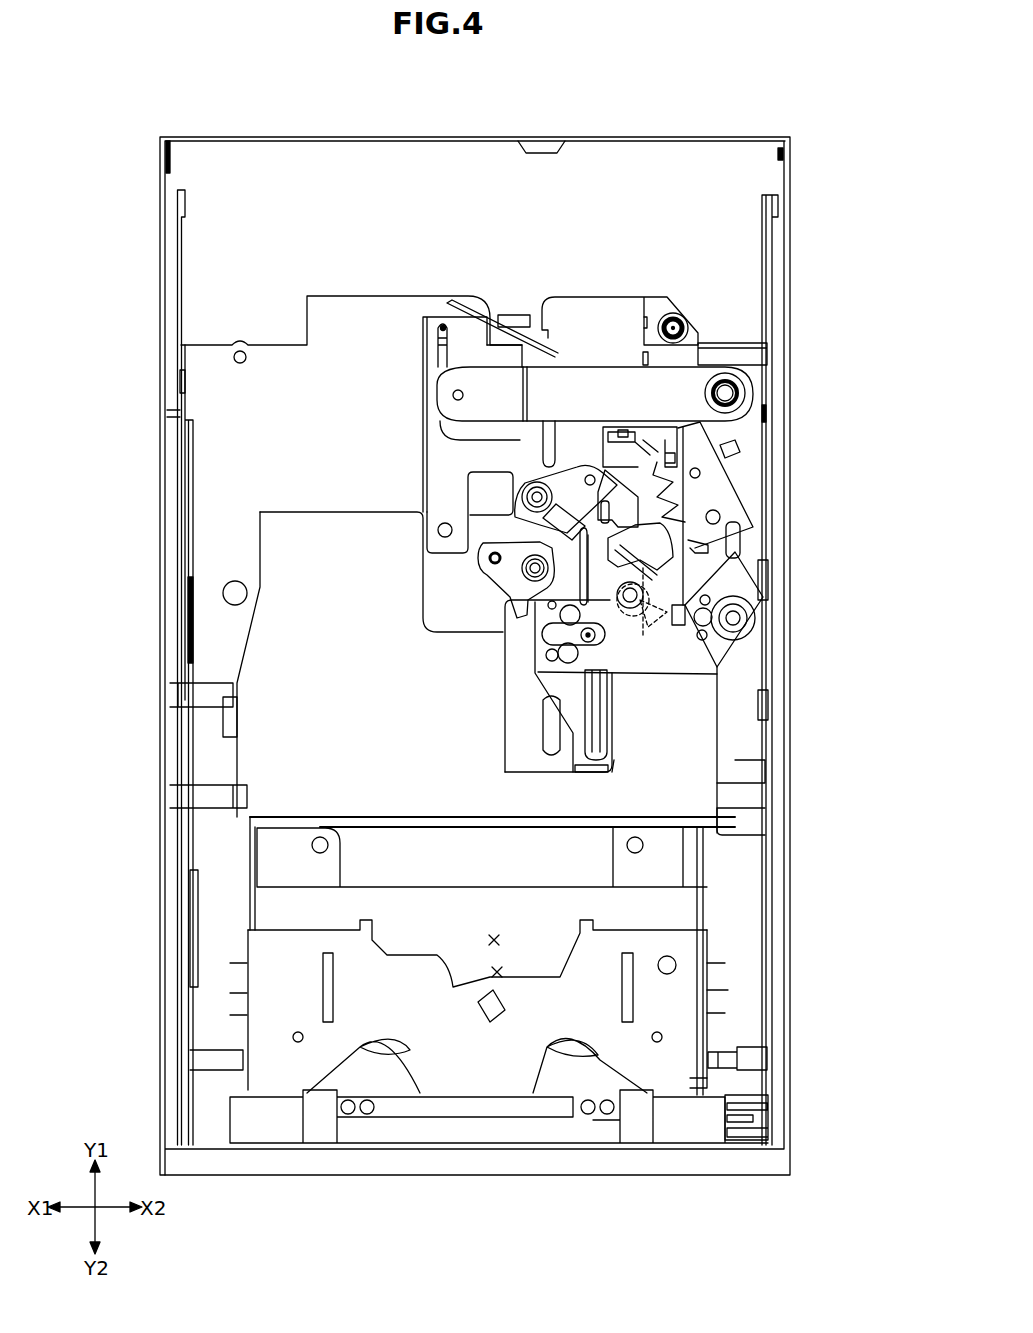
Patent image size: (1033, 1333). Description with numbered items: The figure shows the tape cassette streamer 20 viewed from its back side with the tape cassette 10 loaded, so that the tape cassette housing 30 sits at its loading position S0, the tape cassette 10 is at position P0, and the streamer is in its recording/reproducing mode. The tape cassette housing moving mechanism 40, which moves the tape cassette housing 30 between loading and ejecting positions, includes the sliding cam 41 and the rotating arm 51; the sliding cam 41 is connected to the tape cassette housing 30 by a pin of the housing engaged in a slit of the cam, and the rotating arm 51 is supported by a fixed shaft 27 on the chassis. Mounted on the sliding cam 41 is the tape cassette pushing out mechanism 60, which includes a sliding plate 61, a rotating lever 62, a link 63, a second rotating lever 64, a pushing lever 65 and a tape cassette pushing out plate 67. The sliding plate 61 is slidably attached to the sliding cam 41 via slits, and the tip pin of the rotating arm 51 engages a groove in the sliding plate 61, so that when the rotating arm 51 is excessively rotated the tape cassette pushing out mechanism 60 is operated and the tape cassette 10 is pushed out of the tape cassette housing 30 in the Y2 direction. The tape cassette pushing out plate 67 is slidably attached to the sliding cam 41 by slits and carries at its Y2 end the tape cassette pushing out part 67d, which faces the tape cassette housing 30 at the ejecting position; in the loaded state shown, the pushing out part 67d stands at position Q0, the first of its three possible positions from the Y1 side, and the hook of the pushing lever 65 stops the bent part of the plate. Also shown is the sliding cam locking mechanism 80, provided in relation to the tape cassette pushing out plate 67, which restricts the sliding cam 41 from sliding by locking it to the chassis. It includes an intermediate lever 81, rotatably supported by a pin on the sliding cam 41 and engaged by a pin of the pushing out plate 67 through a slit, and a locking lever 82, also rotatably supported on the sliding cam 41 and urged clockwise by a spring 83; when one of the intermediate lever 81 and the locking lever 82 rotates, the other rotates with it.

The tape cassette streamer 20 is at (766, 97).
The tape cassette 10 is at (290, 990).
The tape cassette housing 30 is at (215, 808).
The tape cassette housing moving mechanism 40 is at (170, 613).
The sliding cam 41 is at (345, 312).
The rotating arm 51 is at (612, 375).
The fixed shaft 27 is at (723, 390).
The spring 83 is at (585, 500).
The link 63 is at (742, 465).
The locking lever 82 is at (727, 500).
The pushing lever 65 is at (705, 528).
The sliding cam locking mechanism 80 is at (790, 548).
The sliding plate 61 is at (432, 452).
The rotating lever 62 is at (467, 537).
The rotating lever 64 is at (513, 562).
The tape cassette pushing out mechanism 60 is at (472, 643).
The tape cassette pushing out plate 67 is at (605, 700).
The tape cassette pushing out part 67d is at (592, 772).
The intermediate lever 81 is at (703, 665).
The position Q0 is at (612, 765).
The loading position S0 is at (508, 938).
The position P0 is at (510, 971).